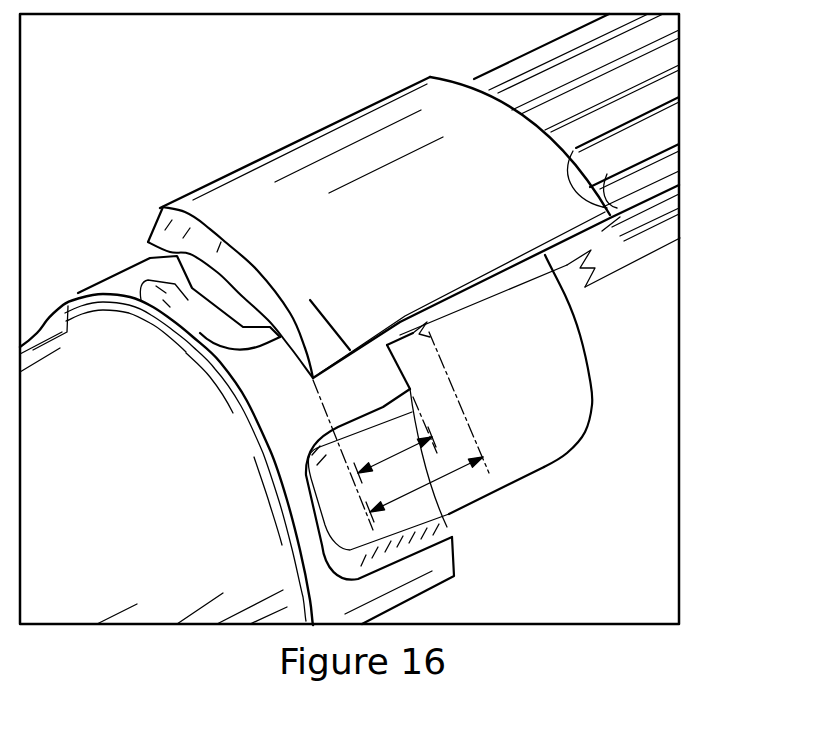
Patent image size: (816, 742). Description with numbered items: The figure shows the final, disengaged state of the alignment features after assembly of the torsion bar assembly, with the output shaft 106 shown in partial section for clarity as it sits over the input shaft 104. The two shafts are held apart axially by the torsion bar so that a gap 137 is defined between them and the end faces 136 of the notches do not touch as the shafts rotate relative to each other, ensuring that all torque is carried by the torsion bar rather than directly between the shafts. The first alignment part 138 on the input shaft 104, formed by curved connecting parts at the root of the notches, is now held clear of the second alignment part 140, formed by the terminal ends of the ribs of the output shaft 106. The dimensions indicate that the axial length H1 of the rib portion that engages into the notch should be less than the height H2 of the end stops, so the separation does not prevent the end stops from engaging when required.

The input shaft 104 is at (172, 591).
The output shaft 106 is at (608, 150).
The end faces 136 is at (215, 292).
The gap 137 is at (193, 312).
The first alignment part 138 is at (173, 319).
The second alignment part 140 is at (230, 300).
The axial length of the rib portion engaging the notch H1 is at (415, 448).
The height of the end stops H2 is at (412, 487).